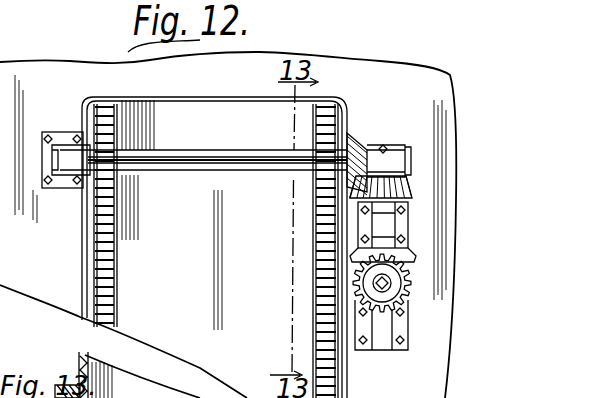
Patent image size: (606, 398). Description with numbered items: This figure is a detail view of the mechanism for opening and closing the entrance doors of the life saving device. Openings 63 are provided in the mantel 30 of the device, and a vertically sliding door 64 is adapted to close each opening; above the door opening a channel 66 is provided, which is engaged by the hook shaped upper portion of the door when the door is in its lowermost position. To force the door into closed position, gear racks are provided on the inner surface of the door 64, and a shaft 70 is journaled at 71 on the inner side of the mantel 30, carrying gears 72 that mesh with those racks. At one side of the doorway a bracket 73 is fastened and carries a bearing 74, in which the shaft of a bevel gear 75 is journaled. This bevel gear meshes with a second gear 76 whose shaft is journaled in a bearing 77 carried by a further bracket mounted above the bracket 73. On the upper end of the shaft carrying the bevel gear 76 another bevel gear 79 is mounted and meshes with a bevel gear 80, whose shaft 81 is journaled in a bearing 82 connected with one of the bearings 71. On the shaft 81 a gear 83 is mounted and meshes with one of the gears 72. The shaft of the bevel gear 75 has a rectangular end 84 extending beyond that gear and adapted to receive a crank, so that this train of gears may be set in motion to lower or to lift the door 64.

The mantel 30 is at (457, 75).
The openings 63 is at (192, 104).
The door 64 is at (172, 358).
The channel 66 is at (76, 385).
The shaft 70 is at (202, 156).
The journal 71 is at (388, 160).
The gears 72 is at (112, 200).
The bracket 73 is at (408, 350).
The bearing 74 is at (66, 132).
The bevel gear 75 is at (412, 290).
The second gear 76 is at (412, 255).
The bearing 77 is at (410, 216).
The bevel gear 79 is at (412, 193).
The bevel gear 80 is at (357, 146).
The shaft 81 is at (412, 152).
The bearing 82 is at (410, 150).
The gear 83 is at (314, 186).
The rectangular end 84 is at (392, 282).